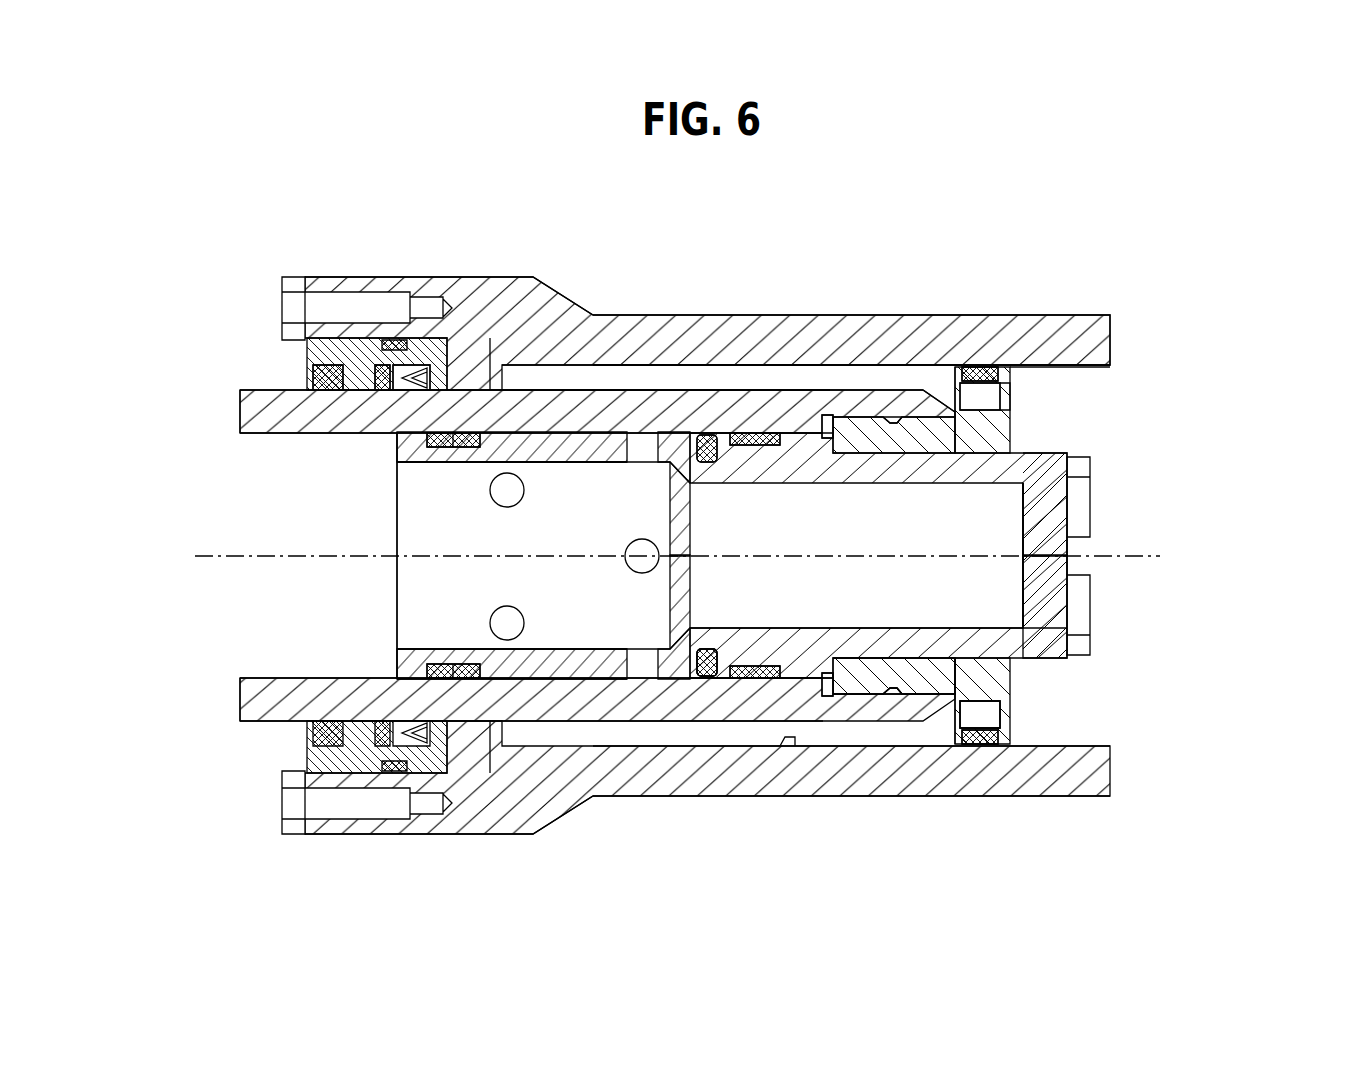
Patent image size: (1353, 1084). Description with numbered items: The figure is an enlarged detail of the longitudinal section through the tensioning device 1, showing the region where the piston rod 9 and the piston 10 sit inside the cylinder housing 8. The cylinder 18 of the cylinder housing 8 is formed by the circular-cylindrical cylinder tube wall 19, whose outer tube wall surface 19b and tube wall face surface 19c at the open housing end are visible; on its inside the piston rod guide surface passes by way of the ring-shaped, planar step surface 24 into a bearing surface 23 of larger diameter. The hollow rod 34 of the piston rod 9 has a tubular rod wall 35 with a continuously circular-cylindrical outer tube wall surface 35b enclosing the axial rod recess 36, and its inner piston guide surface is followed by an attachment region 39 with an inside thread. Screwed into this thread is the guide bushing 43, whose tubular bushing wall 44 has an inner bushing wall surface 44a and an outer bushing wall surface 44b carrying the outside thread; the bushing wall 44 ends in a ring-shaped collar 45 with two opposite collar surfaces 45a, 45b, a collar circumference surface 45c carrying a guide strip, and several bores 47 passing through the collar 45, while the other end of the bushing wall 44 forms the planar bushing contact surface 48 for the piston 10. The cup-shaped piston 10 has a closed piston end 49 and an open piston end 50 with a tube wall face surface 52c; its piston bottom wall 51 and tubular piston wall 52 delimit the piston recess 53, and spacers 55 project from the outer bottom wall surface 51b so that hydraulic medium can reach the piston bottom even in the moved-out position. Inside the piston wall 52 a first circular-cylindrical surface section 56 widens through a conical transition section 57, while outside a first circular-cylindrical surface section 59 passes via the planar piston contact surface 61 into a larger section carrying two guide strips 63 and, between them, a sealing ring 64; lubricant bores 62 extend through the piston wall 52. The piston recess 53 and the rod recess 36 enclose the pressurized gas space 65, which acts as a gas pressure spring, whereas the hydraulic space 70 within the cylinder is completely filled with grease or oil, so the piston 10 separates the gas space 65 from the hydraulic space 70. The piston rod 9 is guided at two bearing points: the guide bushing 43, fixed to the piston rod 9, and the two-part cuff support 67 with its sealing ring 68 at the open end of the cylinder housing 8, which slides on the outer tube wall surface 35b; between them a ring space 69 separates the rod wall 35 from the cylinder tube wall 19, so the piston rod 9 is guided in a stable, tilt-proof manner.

The tensioning device 1 is at (226, 175).
The cylinder housing 8 is at (1080, 325).
The piston rod 9 is at (262, 708).
The piston 10 is at (1050, 653).
The cylinder 18 is at (845, 330).
The cylinder tube wall 19 is at (870, 315).
The outer tube wall surface 19b is at (762, 800).
The tube wall face surface 19c is at (295, 822).
The bearing surface 23 is at (318, 742).
The ring-shaped planar step surface 24 is at (472, 773).
The hollow rod 34 is at (635, 400).
The tubular rod wall 35 is at (665, 395).
The outer tube wall surface 35b is at (711, 383).
The rod recess 36 is at (335, 488).
The attachment region 39 is at (895, 438).
The guide bushing 43 is at (947, 450).
The tubular bushing wall 44 is at (880, 668).
The inner bushing wall surface 44a is at (965, 735).
The outer bushing wall surface 44b is at (927, 388).
The collar 45 is at (995, 745).
The first collar surface 45a is at (1012, 392).
The second collar surface 45b is at (948, 372).
The collar circumference surface 45c is at (968, 367).
The bores 47 is at (990, 400).
The bushing contact surface 48 is at (820, 430).
The closed piston end 49 is at (1135, 450).
The open piston end 50 is at (372, 520).
The piston bottom wall 51 is at (1088, 505).
The outer bottom wall surface 51b is at (1080, 548).
The tubular piston wall 52 is at (580, 652).
The tube wall face surface 52c is at (392, 668).
The piston recess 53 is at (708, 668).
The spacers 55 is at (1095, 512).
The first circular-cylindrical surface section 56 is at (738, 600).
The conical transition section 57 is at (687, 487).
The first circular-cylindrical surface section 59 is at (1020, 602).
The piston contact surface 61 is at (842, 676).
The lubricant bores 62 is at (492, 626).
The guide strip 63 is at (452, 430).
The sealing ring 64 is at (703, 652).
The gas space 65 is at (583, 508).
The cuff support 67 is at (383, 357).
The sealing ring 68 is at (393, 380).
The ring space 69 is at (540, 378).
The hydraulic space 70 is at (1055, 432).